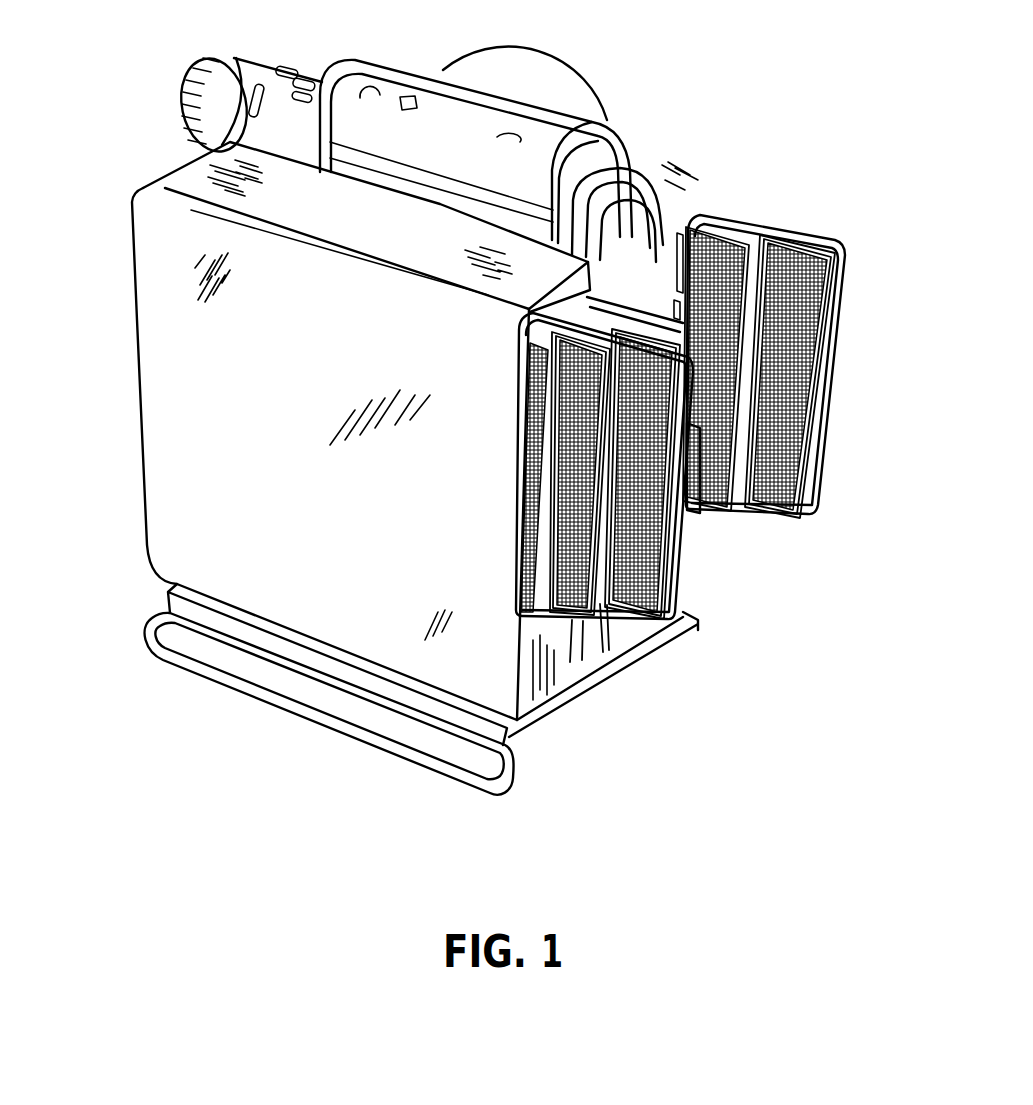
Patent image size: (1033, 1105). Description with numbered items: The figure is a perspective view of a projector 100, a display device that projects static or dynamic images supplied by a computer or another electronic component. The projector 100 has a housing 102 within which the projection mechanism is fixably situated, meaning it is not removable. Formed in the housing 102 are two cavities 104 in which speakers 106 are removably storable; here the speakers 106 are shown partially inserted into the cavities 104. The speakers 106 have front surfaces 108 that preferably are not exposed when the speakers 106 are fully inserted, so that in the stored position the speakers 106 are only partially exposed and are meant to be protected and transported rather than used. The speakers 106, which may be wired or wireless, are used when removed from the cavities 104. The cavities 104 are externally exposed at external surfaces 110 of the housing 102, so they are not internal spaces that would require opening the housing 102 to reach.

The projector 100 is at (243, 784).
The housing 102 is at (162, 260).
The cavities 104 is at (540, 313).
The speakers 106 is at (543, 620).
The front surfaces 108 is at (620, 553).
The external surfaces 110 is at (523, 697).